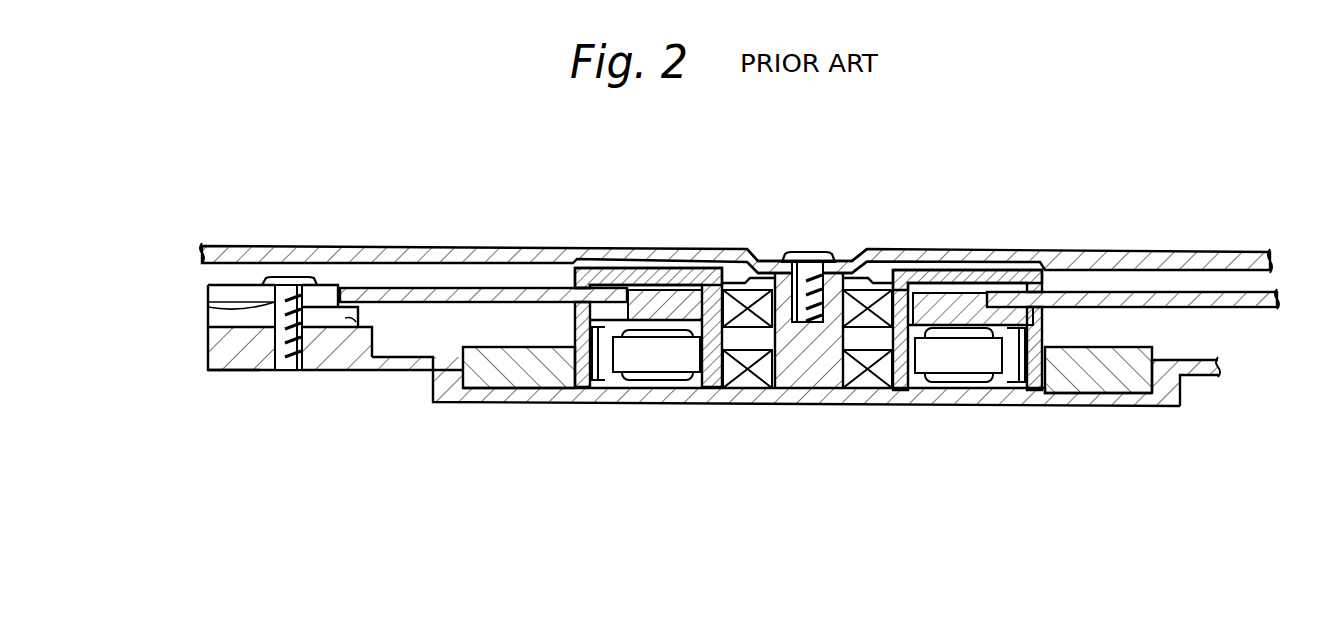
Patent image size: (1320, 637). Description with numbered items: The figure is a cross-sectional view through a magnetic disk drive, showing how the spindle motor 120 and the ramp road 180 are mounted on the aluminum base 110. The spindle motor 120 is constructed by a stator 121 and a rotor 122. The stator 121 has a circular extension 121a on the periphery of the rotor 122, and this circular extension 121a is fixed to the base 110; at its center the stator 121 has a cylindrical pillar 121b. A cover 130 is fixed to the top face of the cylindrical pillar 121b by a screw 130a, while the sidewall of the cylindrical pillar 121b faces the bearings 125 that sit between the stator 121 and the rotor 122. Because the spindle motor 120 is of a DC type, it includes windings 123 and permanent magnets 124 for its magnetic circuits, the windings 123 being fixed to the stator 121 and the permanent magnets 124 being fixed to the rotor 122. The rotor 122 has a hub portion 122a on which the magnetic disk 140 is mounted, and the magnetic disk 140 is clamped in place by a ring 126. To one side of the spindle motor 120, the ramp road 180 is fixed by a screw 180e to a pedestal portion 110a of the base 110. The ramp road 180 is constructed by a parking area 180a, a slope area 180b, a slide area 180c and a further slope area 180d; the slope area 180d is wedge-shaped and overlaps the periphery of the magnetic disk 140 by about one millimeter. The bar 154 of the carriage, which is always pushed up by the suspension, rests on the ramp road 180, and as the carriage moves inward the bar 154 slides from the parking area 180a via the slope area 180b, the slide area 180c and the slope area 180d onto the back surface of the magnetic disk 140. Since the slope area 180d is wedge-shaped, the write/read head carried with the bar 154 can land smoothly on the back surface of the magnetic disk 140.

The base 110 is at (739, 421).
The pedestal portion 110a is at (222, 406).
The spindle motor 120 is at (776, 366).
The stator 121 is at (807, 387).
The circular extension 121a is at (528, 378).
The cylindrical pillar 121b is at (835, 283).
The rotor 122 is at (680, 305).
The hub portion 122a is at (600, 282).
The windings 123 is at (660, 355).
The permanent magnets 124 is at (811, 393).
The bearings 125 is at (743, 378).
The ring 126 is at (656, 288).
The cover 130 is at (510, 248).
The screw 130a is at (808, 255).
The magnetic disk 140 is at (454, 290).
The bar 154 is at (352, 318).
The ramp road 180 is at (293, 283).
The parking area 180a is at (218, 302).
The slope area 180b is at (244, 306).
The slide area 180c is at (352, 323).
The slope area 180d is at (337, 303).
The screw 180e is at (285, 371).